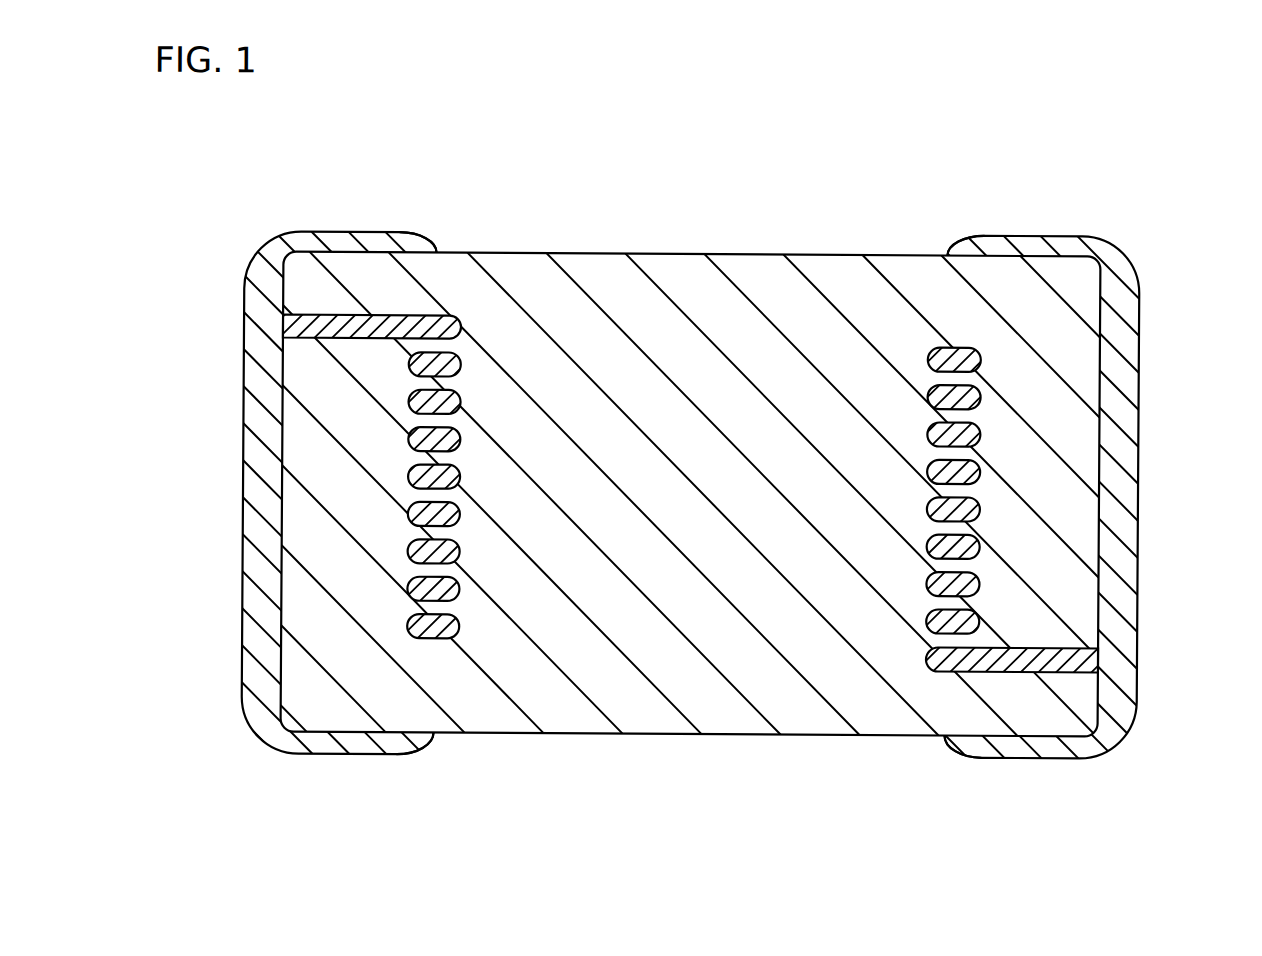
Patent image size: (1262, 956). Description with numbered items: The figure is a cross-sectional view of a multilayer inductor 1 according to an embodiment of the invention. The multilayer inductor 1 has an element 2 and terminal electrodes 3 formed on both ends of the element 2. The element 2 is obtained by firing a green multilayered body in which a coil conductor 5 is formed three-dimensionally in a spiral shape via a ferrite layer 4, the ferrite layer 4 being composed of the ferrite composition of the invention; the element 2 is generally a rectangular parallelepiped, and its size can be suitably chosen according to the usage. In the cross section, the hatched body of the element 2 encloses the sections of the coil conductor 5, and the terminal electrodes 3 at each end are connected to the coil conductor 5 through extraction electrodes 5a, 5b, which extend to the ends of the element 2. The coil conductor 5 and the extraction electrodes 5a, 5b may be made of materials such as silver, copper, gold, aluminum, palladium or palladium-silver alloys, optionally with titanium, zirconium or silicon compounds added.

The multilayer inductor 1 is at (1066, 210).
The element 2 is at (1202, 522).
The terminal electrode 3 is at (270, 480).
The ferrite layer 4 is at (967, 486).
The coil conductor 5 is at (965, 581).
The extraction electrode 5a is at (1021, 672).
The extraction electrode 5b is at (377, 318).